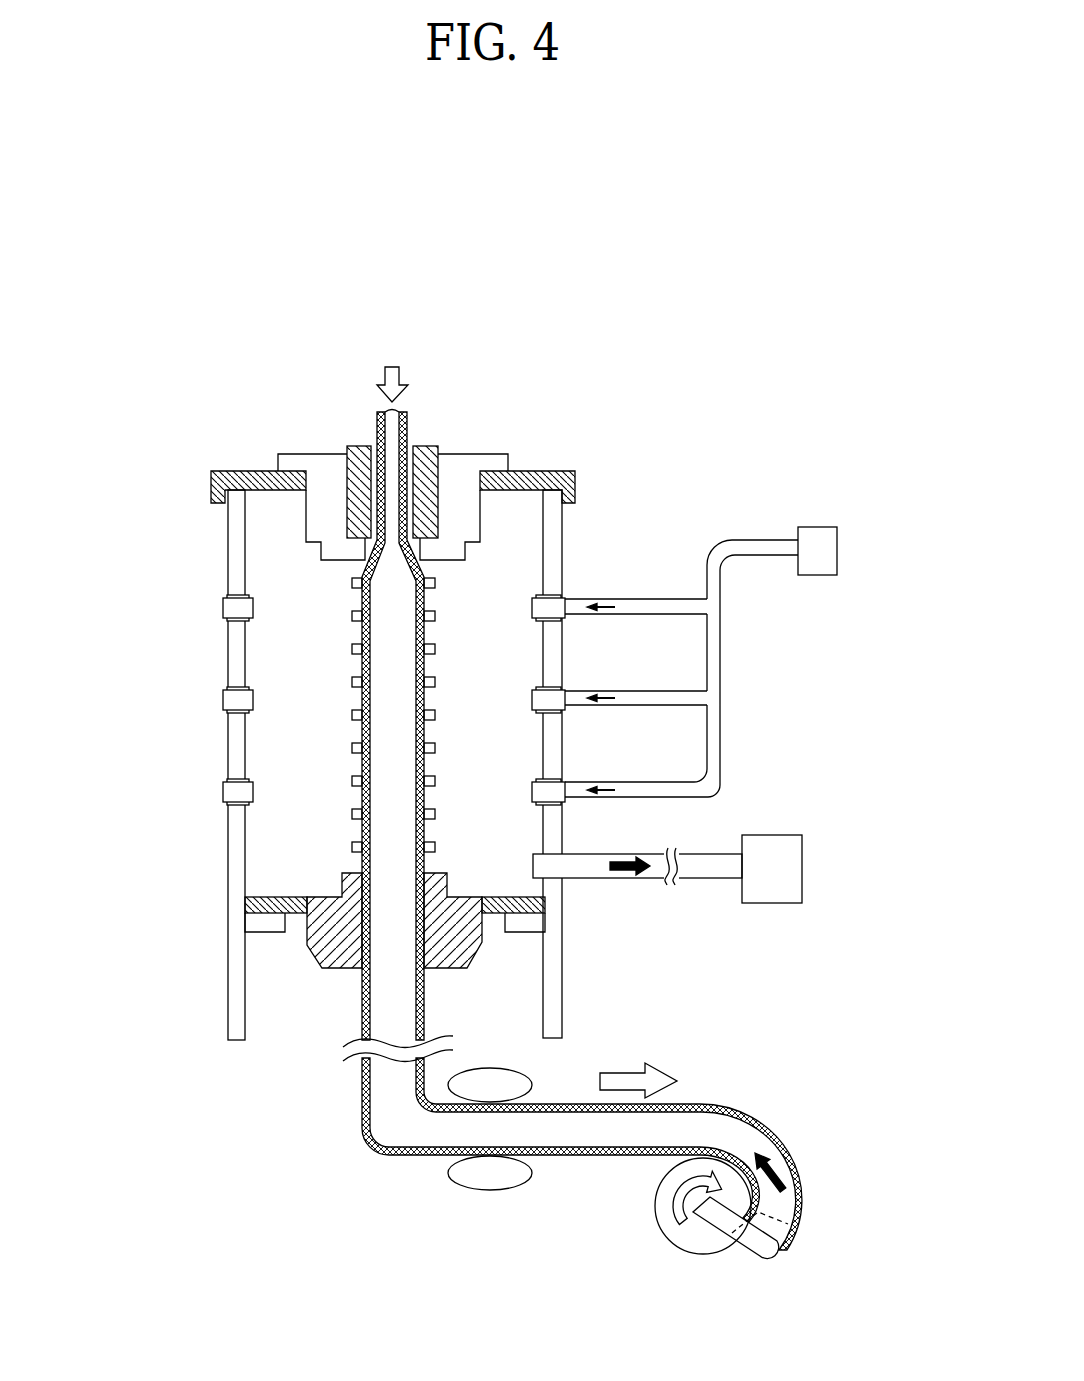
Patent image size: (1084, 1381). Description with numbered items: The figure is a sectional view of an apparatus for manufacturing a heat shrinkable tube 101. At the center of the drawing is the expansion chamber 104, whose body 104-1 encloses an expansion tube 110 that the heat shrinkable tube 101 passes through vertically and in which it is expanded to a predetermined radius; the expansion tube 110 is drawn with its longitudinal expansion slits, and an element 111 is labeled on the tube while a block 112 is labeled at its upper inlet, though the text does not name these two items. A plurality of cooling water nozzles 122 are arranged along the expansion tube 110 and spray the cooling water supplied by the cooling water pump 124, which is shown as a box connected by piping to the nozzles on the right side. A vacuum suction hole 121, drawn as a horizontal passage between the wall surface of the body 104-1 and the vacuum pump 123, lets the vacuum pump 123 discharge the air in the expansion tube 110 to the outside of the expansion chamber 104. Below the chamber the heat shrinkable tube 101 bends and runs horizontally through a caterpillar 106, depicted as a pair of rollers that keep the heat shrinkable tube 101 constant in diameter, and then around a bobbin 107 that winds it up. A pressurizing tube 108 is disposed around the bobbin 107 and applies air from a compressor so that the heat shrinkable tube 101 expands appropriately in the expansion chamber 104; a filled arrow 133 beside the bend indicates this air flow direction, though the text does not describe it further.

The expansion chamber 104 is at (598, 457).
The body of the expansion chamber 104-1 is at (231, 858).
The expansion tube 110 is at (331, 452).
The sealing block 112 is at (422, 443).
The nozzle tube 111 is at (428, 593).
The cooling water nozzles 122 is at (225, 608).
The cooling water pump 124 is at (817, 555).
The vacuum pump 123 is at (767, 835).
The vacuum suction hole 121 is at (562, 868).
The heat shrinkable tube 101 is at (360, 1068).
The caterpillar 106 is at (492, 1175).
The bobbin 107 is at (655, 1225).
The pressurizing tube 108 is at (747, 1248).
The flow direction arrow 133 is at (775, 1162).